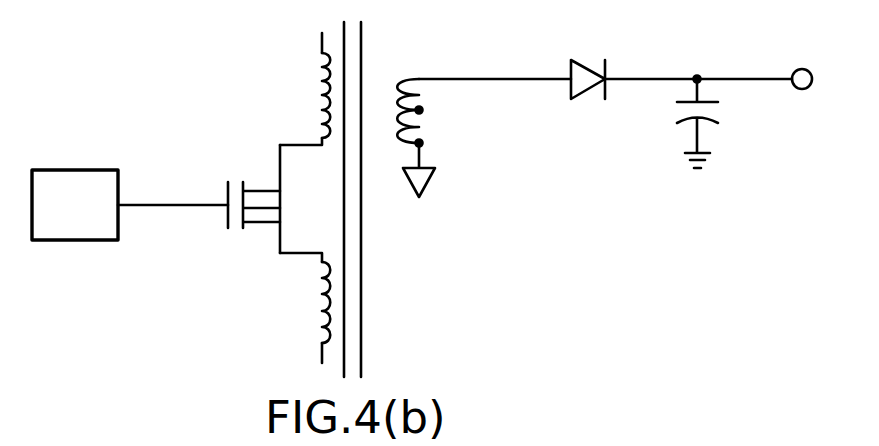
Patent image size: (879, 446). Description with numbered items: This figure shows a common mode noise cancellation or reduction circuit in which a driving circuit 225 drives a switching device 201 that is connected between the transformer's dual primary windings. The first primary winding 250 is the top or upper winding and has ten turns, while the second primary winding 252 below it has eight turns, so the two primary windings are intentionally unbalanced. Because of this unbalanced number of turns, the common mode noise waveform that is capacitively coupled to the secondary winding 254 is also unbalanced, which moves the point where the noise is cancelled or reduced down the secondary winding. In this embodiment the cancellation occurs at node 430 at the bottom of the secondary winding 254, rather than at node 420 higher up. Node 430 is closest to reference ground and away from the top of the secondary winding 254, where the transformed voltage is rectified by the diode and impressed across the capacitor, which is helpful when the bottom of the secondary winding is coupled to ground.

The driving circuit 225 is at (100, 215).
The switching device 201 is at (228, 188).
The first primary winding 250 is at (322, 73).
The second primary winding 252 is at (322, 327).
The secondary winding 254 is at (419, 95).
The node 420 is at (419, 110).
The node 430 is at (419, 143).